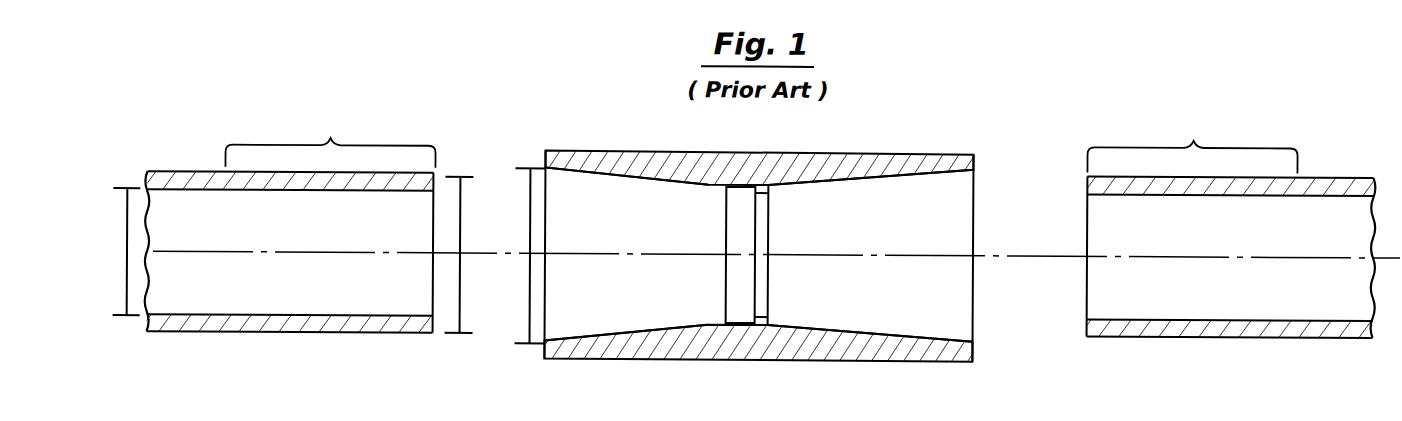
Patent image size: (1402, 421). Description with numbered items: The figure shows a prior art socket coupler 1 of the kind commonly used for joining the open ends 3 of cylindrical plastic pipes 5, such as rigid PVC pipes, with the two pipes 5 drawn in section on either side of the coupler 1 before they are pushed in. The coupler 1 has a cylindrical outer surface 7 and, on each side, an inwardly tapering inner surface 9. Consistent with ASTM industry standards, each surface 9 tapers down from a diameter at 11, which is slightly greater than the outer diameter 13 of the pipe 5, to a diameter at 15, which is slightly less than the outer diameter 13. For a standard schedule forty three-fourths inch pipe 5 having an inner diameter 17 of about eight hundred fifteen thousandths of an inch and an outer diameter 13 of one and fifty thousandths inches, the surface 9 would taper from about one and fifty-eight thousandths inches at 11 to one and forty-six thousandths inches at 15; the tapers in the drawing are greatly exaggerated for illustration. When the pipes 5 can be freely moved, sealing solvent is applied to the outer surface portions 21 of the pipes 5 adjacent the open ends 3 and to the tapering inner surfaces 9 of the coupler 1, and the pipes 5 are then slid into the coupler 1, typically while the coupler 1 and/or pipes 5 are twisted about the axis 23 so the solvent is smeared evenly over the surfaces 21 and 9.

The socket coupler 1 is at (737, 198).
The open end 3 is at (433, 227).
The pipe 5 is at (206, 165).
The cylindrical outer surface 7 is at (745, 147).
The inwardly tapering surface 9 is at (623, 171).
The diameter at entry of tapering surface 11 is at (530, 212).
The outer diameter of the pipe 13 is at (460, 214).
The diameter at inner end of tapering surface 15 is at (725, 223).
The inner diameter of the pipe 17 is at (127, 247).
The outer surface portion 21 is at (761, 139).
The axis 23 is at (220, 252).